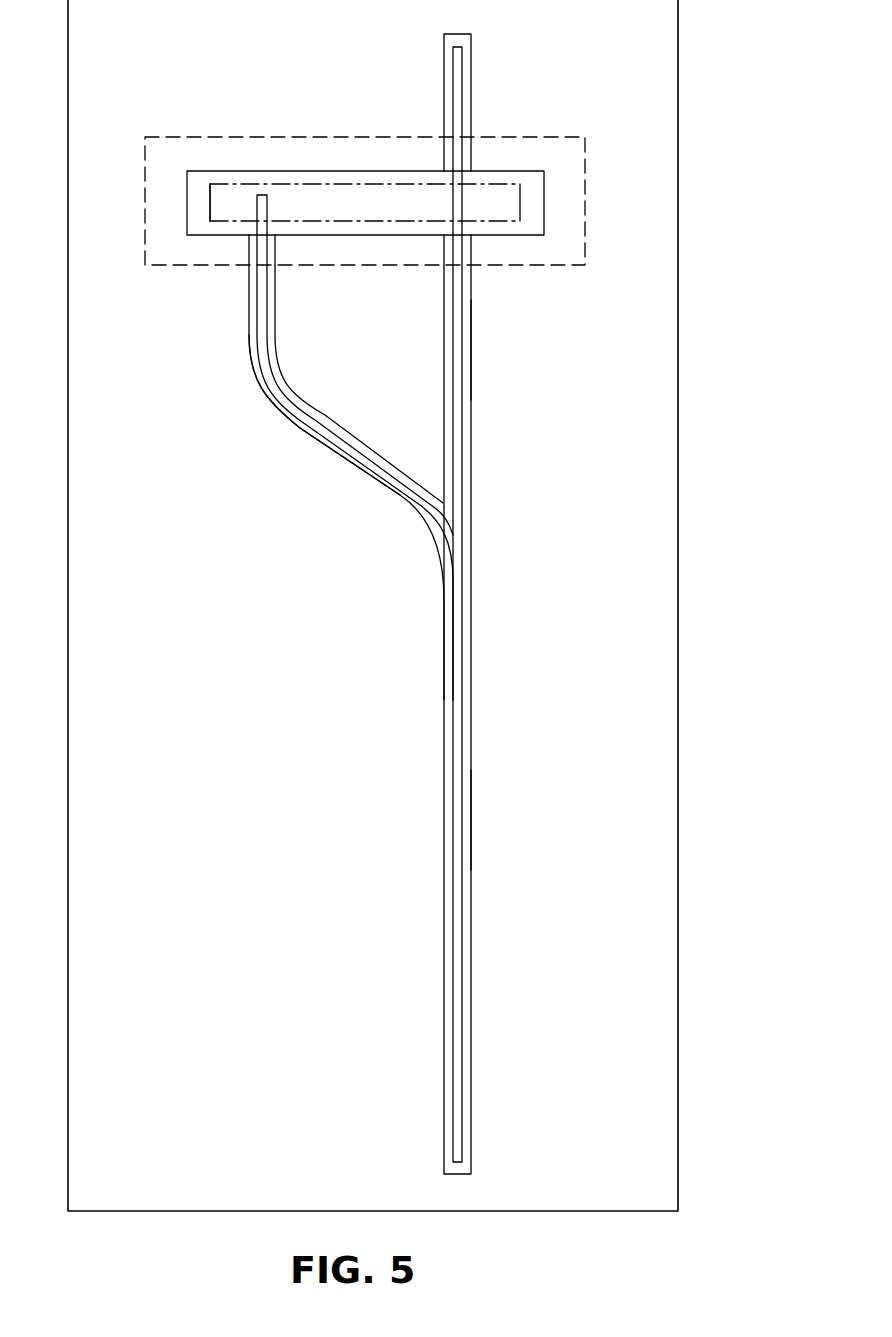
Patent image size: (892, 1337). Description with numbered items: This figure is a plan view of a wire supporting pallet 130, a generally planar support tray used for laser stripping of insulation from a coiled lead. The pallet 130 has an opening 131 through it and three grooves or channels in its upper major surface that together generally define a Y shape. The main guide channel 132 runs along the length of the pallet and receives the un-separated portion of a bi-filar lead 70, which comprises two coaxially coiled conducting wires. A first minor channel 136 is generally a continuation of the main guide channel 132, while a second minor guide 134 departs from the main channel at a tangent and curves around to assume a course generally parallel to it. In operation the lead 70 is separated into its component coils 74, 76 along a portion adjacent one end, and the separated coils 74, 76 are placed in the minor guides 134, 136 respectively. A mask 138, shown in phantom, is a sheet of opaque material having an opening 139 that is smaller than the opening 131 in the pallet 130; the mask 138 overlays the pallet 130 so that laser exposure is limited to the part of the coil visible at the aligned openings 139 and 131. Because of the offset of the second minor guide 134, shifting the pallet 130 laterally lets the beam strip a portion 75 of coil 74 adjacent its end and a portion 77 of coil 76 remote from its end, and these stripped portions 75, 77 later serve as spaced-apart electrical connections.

The pallet 130 is at (708, 450).
The mask 138 is at (538, 138).
The opening 131 is at (544, 203).
The opening 139 is at (330, 185).
The coil 76 is at (463, 80).
The bi-filar lead 70 is at (462, 635).
The first minor channel 136 is at (471, 352).
The main guide channel 132 is at (471, 822).
The stripped portion 75 is at (257, 212).
The stripped portion 77 is at (453, 203).
The coil 74 is at (257, 322).
The second minor guide 134 is at (333, 450).